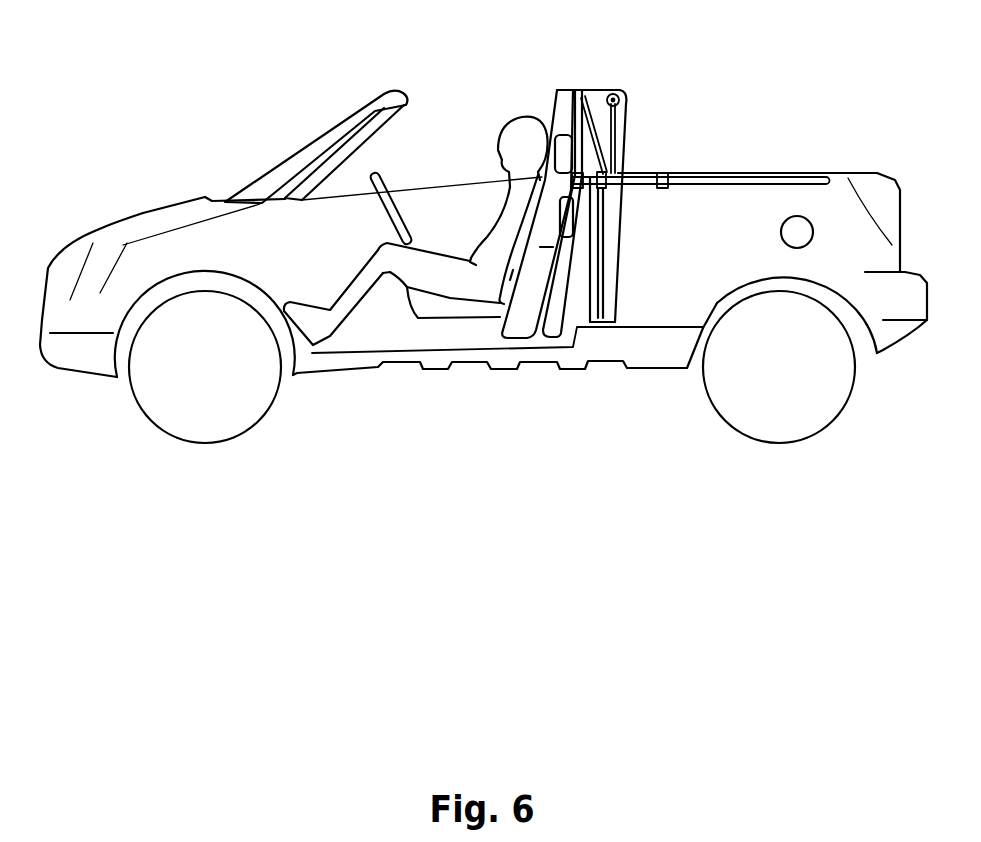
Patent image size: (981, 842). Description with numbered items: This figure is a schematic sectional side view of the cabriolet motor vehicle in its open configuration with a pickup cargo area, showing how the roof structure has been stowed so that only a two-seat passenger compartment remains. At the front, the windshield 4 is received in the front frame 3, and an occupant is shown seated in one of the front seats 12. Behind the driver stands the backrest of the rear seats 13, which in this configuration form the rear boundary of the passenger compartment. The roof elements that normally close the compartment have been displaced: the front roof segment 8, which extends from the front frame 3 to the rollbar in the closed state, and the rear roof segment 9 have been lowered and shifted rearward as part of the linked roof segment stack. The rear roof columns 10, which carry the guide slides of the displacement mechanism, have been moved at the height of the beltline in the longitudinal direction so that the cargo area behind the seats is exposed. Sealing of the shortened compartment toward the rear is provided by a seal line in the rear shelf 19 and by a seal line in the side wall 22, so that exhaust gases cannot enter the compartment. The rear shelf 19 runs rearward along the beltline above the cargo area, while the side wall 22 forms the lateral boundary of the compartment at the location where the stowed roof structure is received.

The front frame 3 is at (362, 118).
The windshield 4 is at (287, 158).
The front roof segment 8 is at (590, 330).
The rear roof segment 9 is at (602, 320).
The rear roof columns 10 is at (677, 174).
The front seats 12 is at (510, 307).
The rear seats 13 is at (520, 327).
The rear shelf 19 is at (651, 162).
The side wall 22 is at (647, 254).